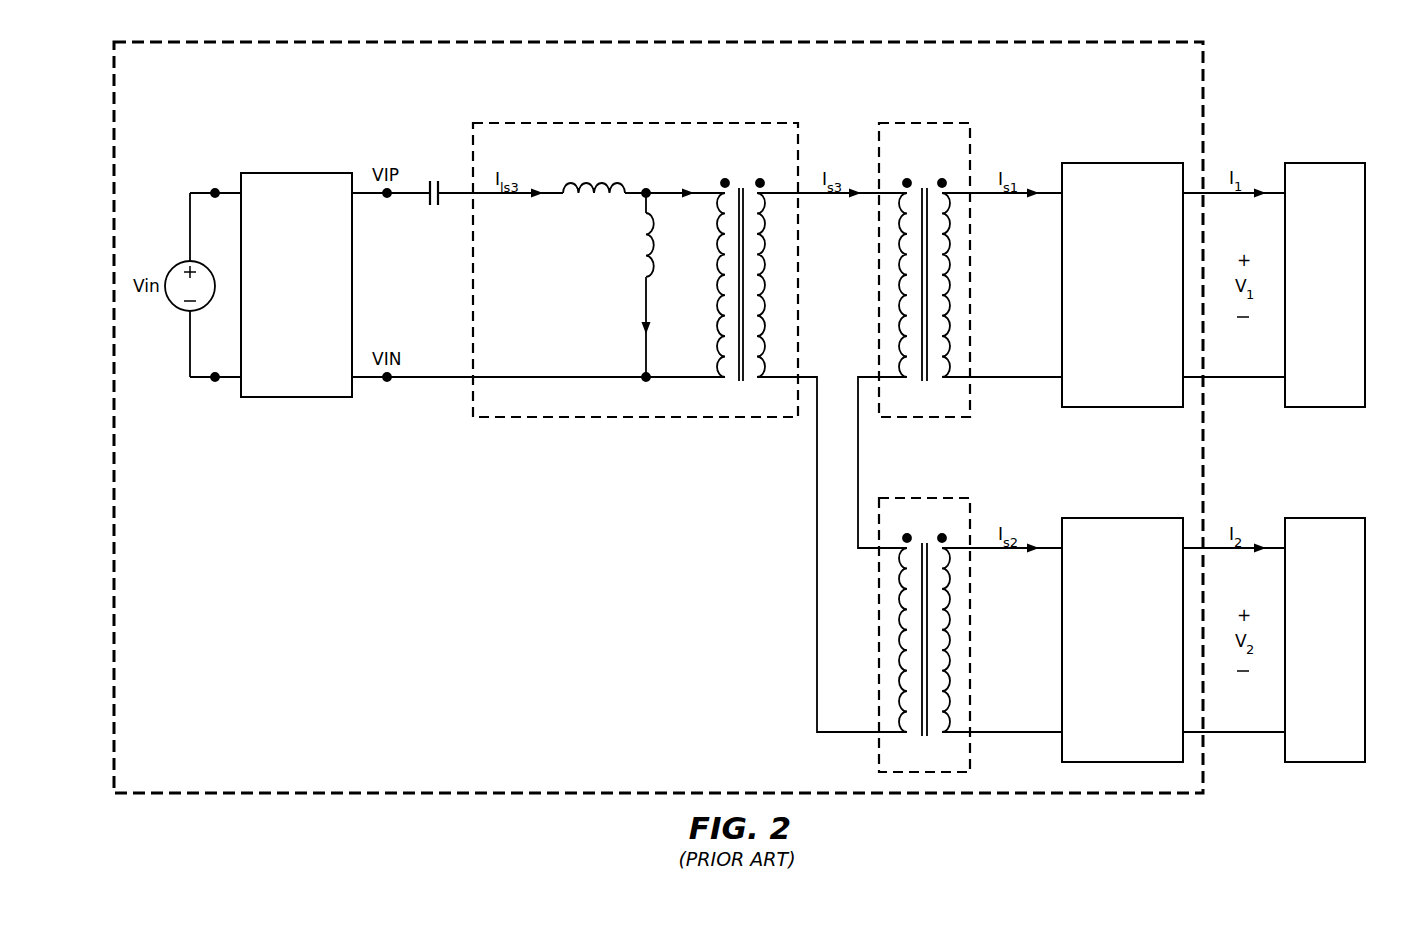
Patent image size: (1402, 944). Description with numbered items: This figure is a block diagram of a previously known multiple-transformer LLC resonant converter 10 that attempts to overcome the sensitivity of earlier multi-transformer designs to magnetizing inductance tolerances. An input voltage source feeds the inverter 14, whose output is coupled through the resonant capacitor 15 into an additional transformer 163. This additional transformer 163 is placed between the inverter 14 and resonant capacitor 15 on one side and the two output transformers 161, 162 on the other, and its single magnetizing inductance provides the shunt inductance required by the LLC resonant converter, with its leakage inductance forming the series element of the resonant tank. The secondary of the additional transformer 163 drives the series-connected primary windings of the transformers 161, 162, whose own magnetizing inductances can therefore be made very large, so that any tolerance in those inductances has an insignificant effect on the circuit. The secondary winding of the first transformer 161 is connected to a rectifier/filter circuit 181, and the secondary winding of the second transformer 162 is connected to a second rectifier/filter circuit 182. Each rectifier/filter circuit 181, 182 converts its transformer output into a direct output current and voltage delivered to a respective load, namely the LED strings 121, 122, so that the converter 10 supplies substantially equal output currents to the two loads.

The LLC resonant converter 10 is at (306, 800).
The inverter 14 is at (297, 173).
The resonant capacitor 15 is at (431, 207).
The additional transformer 163 is at (625, 112).
The transformer 161 is at (925, 112).
The transformer 162 is at (925, 487).
The rectifier/filter circuit 181 is at (1122, 163).
The rectifier/filter circuit 182 is at (1122, 518).
The LED string 121 is at (1325, 163).
The LED string 122 is at (1325, 518).